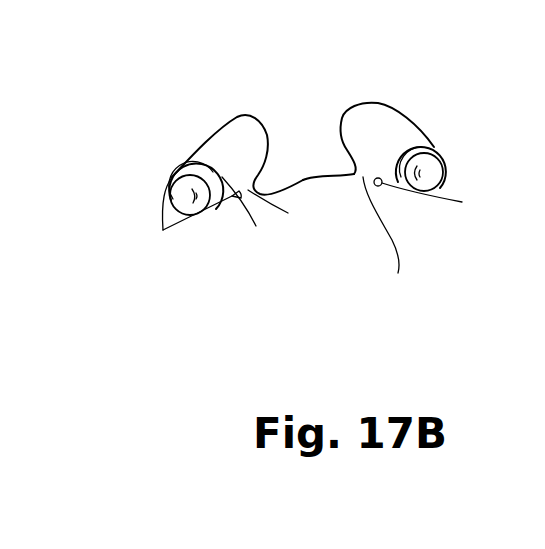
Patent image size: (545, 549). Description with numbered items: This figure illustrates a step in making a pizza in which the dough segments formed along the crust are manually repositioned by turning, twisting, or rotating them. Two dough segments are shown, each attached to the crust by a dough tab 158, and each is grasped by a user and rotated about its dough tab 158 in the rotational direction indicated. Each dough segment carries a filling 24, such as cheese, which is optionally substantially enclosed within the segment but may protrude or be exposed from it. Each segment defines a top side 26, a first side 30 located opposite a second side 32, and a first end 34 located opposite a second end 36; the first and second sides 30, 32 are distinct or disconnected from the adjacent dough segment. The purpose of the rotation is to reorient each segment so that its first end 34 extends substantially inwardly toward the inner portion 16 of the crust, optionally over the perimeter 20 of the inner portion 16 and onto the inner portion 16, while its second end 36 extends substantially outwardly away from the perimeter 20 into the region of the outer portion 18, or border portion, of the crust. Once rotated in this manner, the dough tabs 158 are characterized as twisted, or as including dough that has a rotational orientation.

The inner portion 16 is at (318, 325).
The outer portion 18 is at (243, 80).
The perimeter 20 is at (320, 194).
The filling 24 is at (180, 201).
The top side 26 is at (144, 212).
The first side 30 is at (382, 186).
The second side 32 is at (253, 216).
The first end 34 is at (173, 228).
The second end 36 is at (270, 132).
The dough tab 158 is at (337, 241).